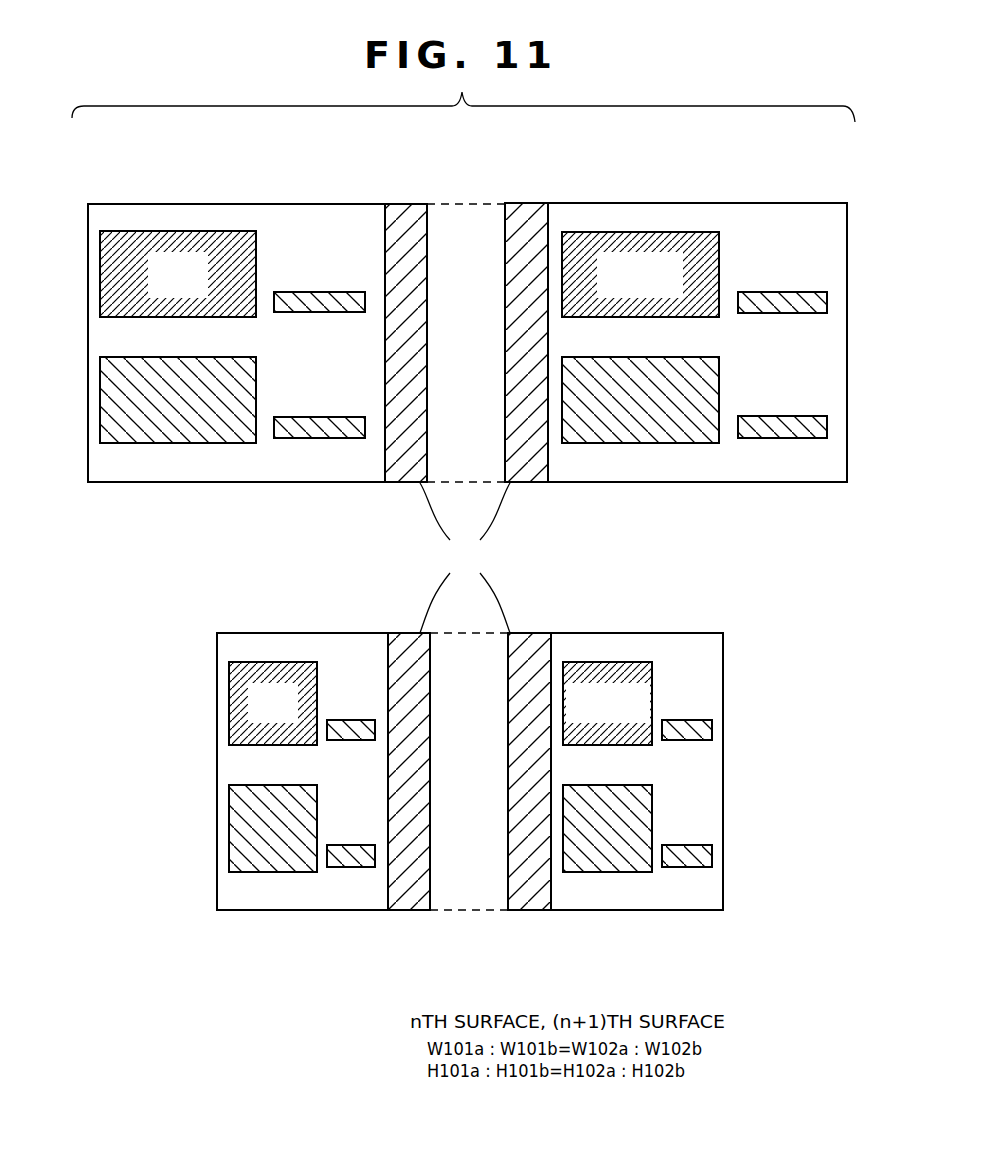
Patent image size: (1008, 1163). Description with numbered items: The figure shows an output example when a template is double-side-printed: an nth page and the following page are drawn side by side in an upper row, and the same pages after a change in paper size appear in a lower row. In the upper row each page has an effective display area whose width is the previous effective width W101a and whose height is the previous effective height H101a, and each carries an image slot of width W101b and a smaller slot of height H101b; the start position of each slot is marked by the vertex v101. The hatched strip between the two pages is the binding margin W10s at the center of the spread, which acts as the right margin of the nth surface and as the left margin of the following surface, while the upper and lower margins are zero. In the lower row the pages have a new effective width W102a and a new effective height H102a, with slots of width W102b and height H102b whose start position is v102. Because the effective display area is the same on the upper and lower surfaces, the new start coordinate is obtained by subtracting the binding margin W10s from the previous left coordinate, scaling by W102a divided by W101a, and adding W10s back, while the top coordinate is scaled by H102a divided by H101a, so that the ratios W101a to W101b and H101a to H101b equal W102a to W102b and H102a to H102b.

The previous effective width W101a is at (385, 200).
The new effective width W101b is at (409, 287).
The previous effective height H101a is at (467, 480).
The new effective height H101b is at (543, 286).
The start position of slot v101 is at (88, 204).
The binding margin W10s is at (472, 418).
The new effective width W102a is at (388, 628).
The slot width after paper size change W102b is at (440, 715).
The new effective height H102a is at (468, 908).
The slot height after paper size change H102b is at (515, 713).
The start position of slot after paper size change v102 is at (217, 633).